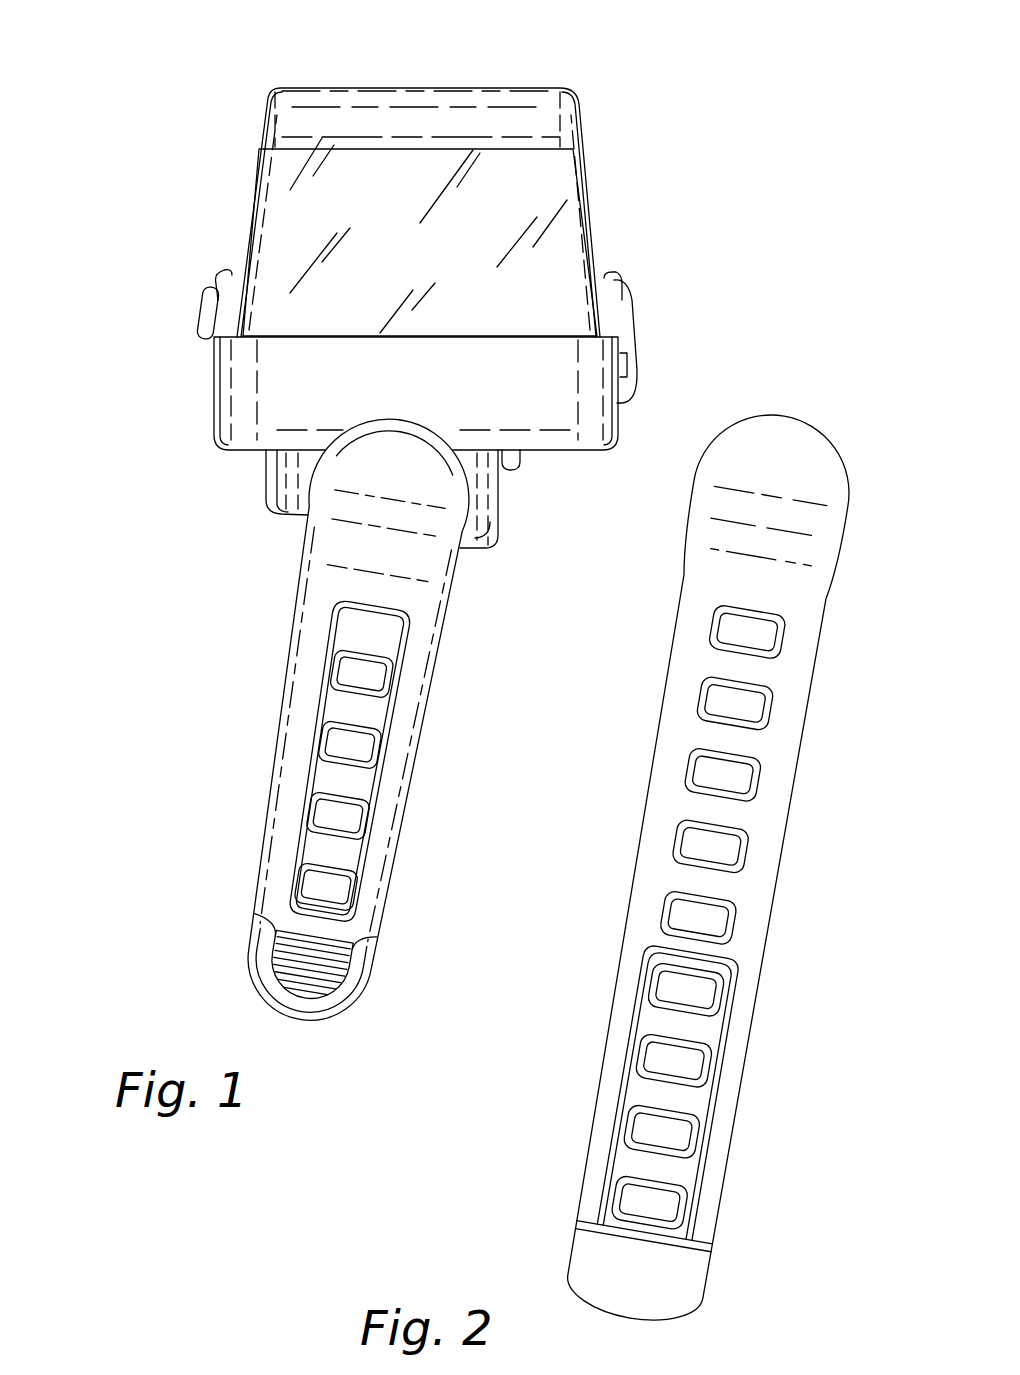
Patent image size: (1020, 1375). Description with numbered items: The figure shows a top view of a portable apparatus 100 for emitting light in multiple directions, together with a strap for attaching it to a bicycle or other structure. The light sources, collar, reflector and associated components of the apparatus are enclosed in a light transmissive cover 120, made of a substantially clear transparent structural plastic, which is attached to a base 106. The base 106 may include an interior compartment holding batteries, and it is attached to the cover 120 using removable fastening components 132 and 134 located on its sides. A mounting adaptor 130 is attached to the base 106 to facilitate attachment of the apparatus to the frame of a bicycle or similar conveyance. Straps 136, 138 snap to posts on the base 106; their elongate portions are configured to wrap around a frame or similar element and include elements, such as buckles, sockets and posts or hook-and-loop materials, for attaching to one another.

In FIG. 1, the portable apparatus 100 is at (152, 95).
In FIG. 1, the base 106 is at (548, 418).
In FIG. 1, the light transmissive cover 120 is at (530, 88).
In FIG. 1, the mounting adaptor 130 is at (493, 542).
In FIG. 1, the fastening component 132 is at (632, 352).
In FIG. 1, the fastening component 134 is at (200, 322).
In FIG. 1, the strap 136 is at (415, 733).
In FIG. 2, the strap 138 is at (783, 760).